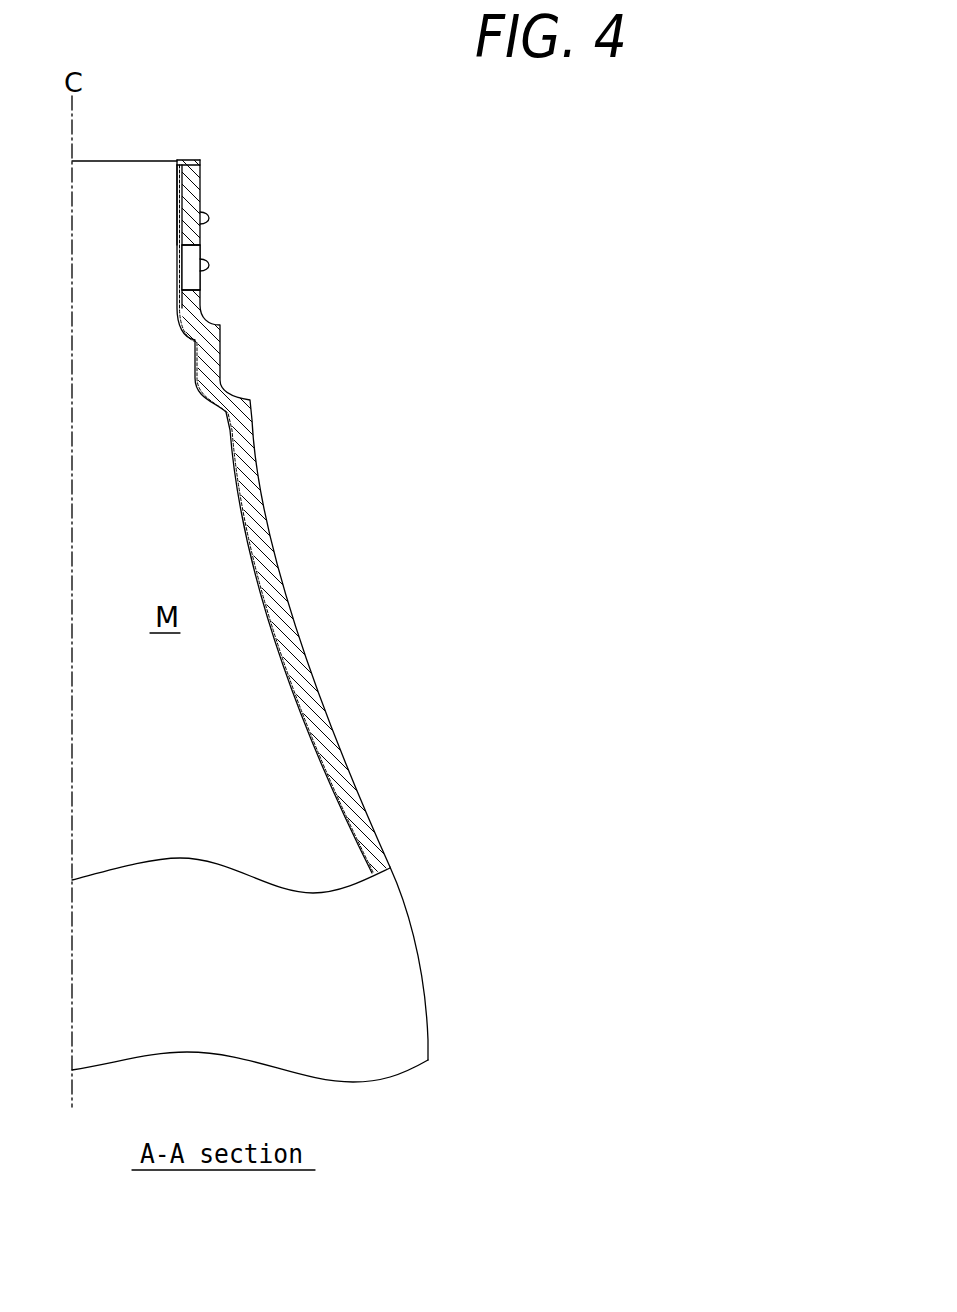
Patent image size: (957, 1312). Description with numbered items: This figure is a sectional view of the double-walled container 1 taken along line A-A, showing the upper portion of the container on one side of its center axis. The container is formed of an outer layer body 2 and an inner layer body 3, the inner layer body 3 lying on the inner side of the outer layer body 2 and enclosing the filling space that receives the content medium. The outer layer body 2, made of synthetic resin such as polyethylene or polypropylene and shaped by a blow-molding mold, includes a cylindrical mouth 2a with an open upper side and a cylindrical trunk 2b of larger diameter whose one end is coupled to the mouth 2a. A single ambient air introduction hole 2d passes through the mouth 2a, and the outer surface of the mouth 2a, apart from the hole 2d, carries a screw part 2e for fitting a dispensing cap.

The double-walled container 1 is at (245, 173).
The outer layer body 2 is at (264, 513).
The mouth 2a is at (200, 198).
The trunk 2b is at (285, 638).
The ambient air introduction hole 2d is at (189, 291).
The screw part 2e is at (216, 218).
The inner layer body 3 is at (177, 192).